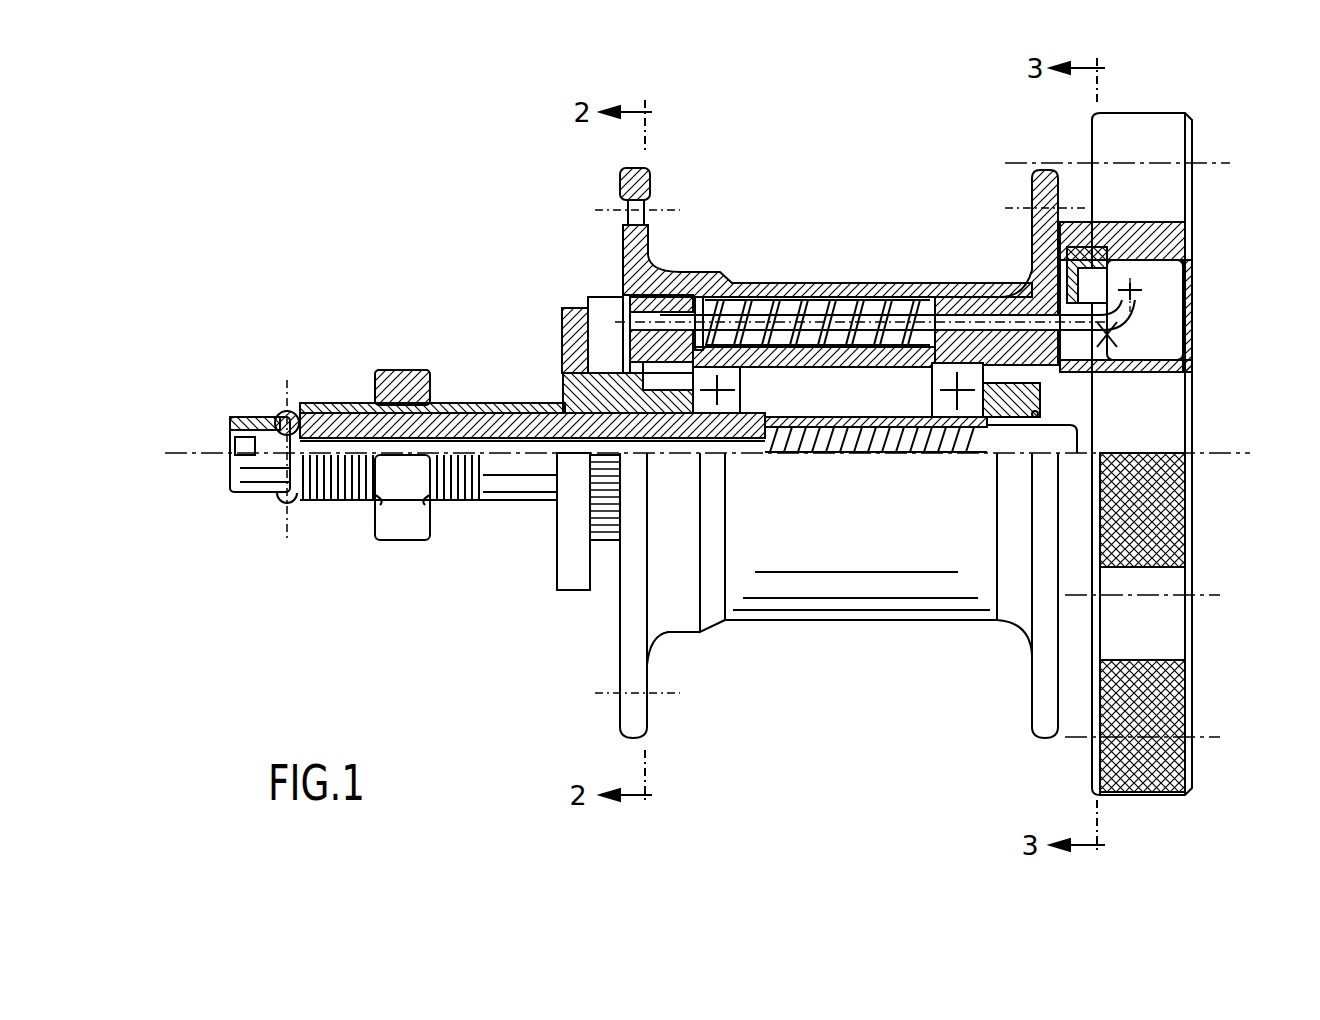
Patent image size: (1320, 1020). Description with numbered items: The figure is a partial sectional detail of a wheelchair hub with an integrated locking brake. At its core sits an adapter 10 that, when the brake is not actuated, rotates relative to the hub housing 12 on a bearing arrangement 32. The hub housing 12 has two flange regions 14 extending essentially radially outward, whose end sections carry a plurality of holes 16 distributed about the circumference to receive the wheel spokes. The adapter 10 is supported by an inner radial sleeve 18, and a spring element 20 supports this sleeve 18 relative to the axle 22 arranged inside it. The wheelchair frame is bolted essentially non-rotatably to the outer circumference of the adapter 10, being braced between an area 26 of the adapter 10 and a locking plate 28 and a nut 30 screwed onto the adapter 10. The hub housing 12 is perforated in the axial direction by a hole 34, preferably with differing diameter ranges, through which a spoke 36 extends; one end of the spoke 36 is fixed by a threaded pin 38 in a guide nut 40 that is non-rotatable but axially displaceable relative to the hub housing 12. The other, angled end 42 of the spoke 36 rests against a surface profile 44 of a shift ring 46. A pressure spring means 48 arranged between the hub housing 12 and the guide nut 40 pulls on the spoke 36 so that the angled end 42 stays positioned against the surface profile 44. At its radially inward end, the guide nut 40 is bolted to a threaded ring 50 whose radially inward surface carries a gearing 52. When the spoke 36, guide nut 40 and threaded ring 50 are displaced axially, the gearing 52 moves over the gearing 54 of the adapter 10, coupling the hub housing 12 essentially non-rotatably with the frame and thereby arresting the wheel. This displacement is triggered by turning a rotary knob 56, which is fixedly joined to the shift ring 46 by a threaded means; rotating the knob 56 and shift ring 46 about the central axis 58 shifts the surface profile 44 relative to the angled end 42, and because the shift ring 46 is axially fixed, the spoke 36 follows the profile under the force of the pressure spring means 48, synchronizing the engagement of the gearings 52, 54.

The adapter 10 is at (520, 412).
The hub housing 12 is at (652, 268).
The flange regions 14 is at (655, 172).
The holes 16 is at (626, 210).
The inner radial sleeve 18 is at (553, 432).
The spring element 20 is at (845, 447).
The axle 22 is at (737, 447).
The area 26 is at (578, 393).
The locking plate 28 is at (568, 302).
The nut 30 is at (410, 388).
The bearing arrangement 32 is at (737, 407).
The hole 34 is at (800, 298).
The spoke 36 is at (1104, 322).
The threaded pin 38 is at (688, 297).
The guide nut 40 is at (783, 310).
The angled end 42 is at (1140, 298).
The surface profile 44 is at (1180, 320).
The shift ring 46 is at (1085, 258).
The pressure spring means 48 is at (868, 312).
The threaded ring 50 is at (645, 372).
The gearing 52 is at (743, 383).
The gearing 54 is at (606, 357).
The rotary knob 56 is at (1195, 245).
The central axis 58 is at (1222, 452).